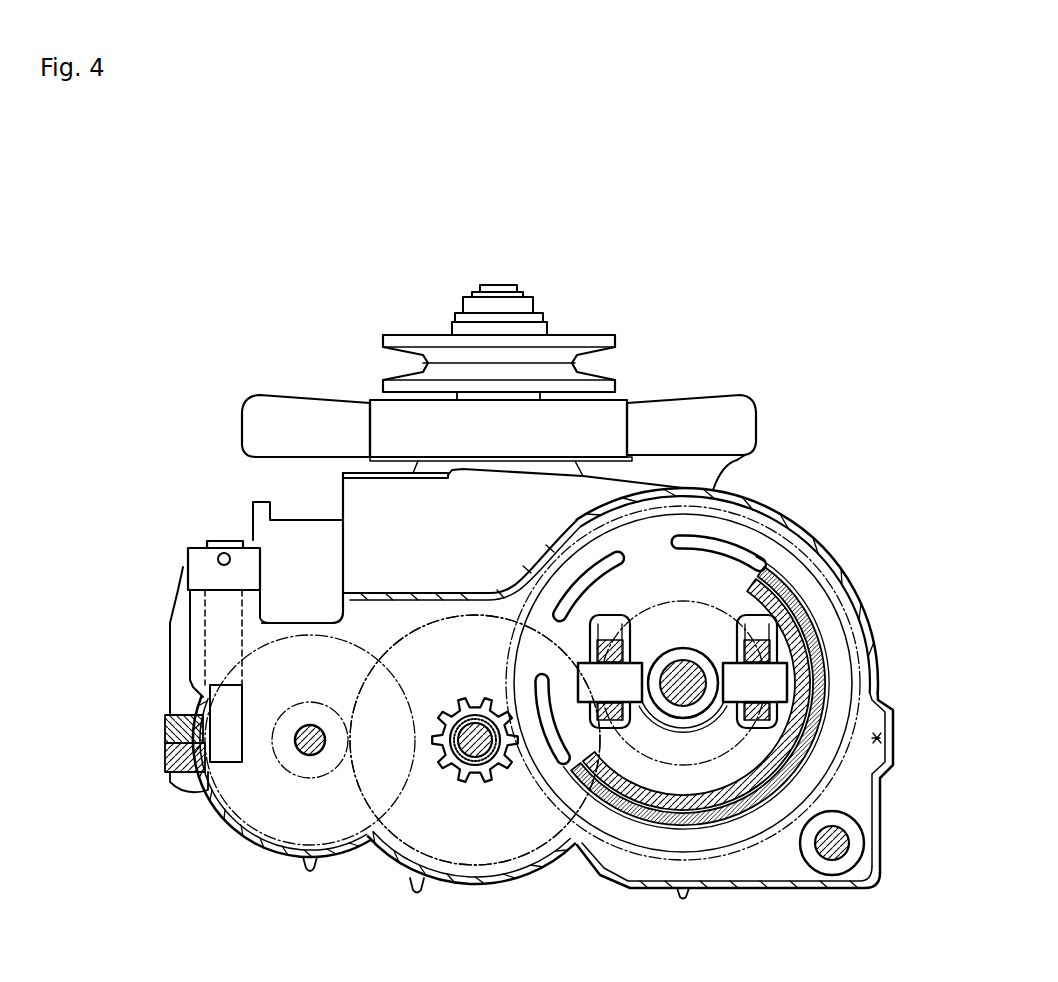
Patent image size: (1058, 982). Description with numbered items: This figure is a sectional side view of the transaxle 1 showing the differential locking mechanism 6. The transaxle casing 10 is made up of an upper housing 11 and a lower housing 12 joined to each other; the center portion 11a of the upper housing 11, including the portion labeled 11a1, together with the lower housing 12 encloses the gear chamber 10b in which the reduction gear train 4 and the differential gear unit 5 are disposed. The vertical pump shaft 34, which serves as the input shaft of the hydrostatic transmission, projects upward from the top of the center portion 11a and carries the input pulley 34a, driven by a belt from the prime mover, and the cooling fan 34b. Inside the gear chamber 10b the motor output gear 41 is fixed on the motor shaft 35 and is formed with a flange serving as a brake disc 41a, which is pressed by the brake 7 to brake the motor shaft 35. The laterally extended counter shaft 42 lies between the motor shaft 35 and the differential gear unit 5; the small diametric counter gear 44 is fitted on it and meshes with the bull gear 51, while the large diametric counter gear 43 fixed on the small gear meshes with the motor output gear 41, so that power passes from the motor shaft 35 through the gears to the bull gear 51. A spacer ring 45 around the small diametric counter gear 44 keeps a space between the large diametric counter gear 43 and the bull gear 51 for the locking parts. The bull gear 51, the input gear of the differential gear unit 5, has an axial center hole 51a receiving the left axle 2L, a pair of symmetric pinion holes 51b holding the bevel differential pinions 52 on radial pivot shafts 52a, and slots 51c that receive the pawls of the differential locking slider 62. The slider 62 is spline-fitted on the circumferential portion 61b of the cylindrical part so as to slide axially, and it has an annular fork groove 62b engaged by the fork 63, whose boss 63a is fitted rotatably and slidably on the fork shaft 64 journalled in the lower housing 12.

The transaxle 1 is at (213, 302).
The left axle 2L is at (683, 668).
The reduction gear train 4 is at (503, 608).
The differential gear unit 5 is at (902, 500).
The differential locking mechanism 6 is at (725, 594).
The brake 7 is at (195, 660).
The transaxle casing 10 is at (133, 688).
The gear chamber 10b is at (518, 867).
The upper housing 11 is at (165, 728).
The center portion 11a is at (495, 527).
The housing connecting portion 11a1 is at (738, 458).
The lower housing 12 is at (165, 752).
The pump shaft 34 is at (497, 284).
The input pulley 34a is at (383, 350).
The cooling fan 34b is at (247, 430).
The motor shaft 35 is at (317, 745).
The motor output gear 41 is at (317, 703).
The brake disc 41a is at (360, 646).
The counter shaft 42 is at (468, 755).
The large diametric counter gear 43 is at (437, 620).
The small diametric counter gear 44 is at (462, 708).
The spacer ring 45 is at (493, 767).
The bull gear 51 is at (792, 515).
The axial center hole 51a is at (665, 718).
The pinion holes 51b is at (820, 620).
The slots 51c is at (722, 548).
The differential pinions 52 is at (604, 632).
The pivot shaft 52a is at (578, 668).
The circumferential portion 61b is at (800, 700).
The differential locking slider 62 is at (800, 572).
The annular fork groove 62b is at (780, 560).
The fork 63 is at (850, 660).
The boss 63a is at (858, 815).
The fork shaft 64 is at (848, 842).